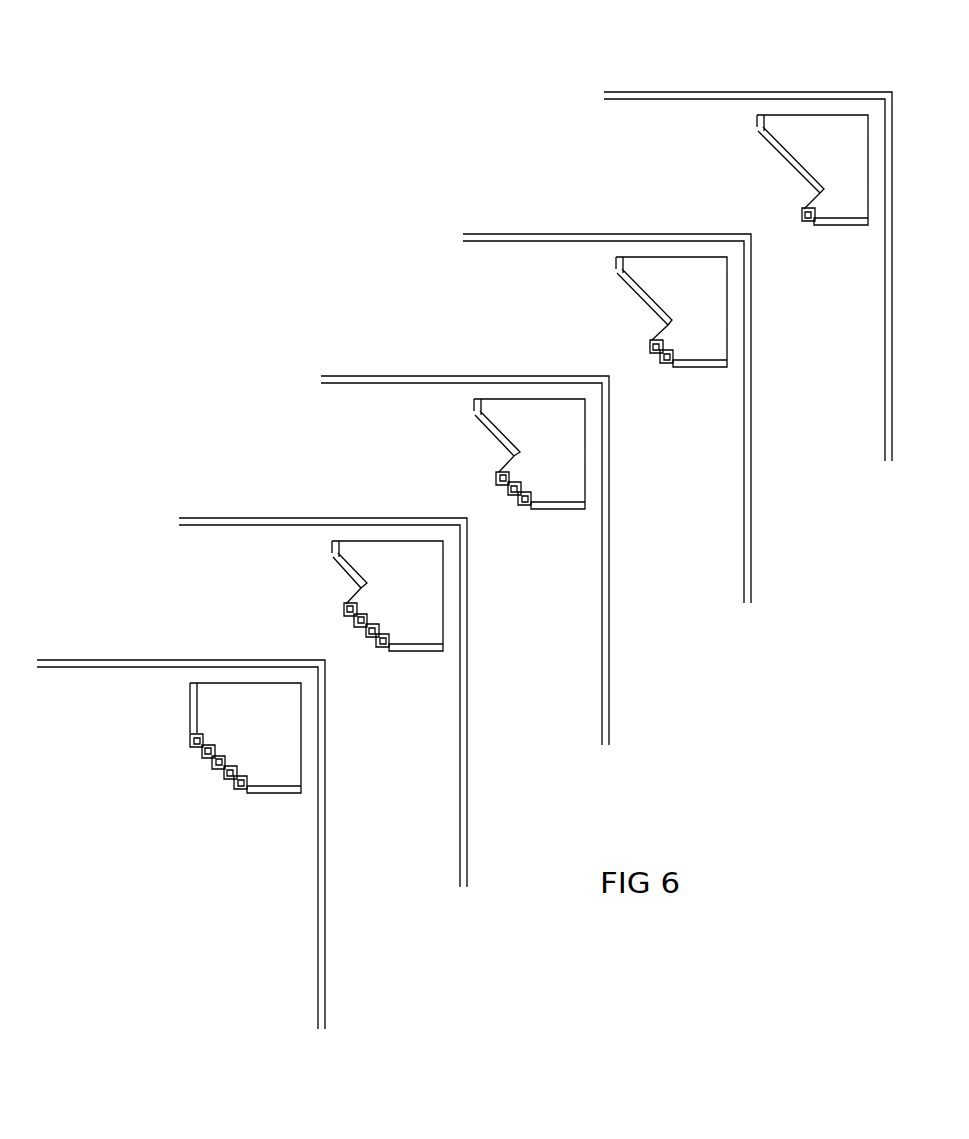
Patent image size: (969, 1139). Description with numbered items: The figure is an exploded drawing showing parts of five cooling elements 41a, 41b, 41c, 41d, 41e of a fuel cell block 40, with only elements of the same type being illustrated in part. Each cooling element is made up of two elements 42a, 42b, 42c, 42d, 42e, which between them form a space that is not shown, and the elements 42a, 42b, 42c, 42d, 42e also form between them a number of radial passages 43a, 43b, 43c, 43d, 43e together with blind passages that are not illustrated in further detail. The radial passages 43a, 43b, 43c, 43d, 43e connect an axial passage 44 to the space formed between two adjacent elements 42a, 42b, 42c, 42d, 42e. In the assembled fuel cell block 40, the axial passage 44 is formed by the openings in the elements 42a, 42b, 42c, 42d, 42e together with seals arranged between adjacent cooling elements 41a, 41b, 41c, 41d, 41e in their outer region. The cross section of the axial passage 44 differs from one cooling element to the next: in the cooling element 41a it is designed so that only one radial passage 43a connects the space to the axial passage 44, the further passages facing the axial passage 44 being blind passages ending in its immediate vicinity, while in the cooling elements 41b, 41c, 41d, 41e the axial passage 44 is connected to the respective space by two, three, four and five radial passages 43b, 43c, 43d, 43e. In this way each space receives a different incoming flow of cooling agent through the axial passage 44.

The fuel cell block 40 is at (705, 757).
The cooling element 41a is at (649, 115).
The cooling element 41b is at (508, 257).
The cooling element 41c is at (366, 399).
The cooling element 41d is at (224, 541).
The cooling element 41e is at (82, 683).
The element 42a is at (713, 92).
The element 42b is at (572, 234).
The element 42c is at (430, 376).
The element 42d is at (288, 518).
The element 42e is at (146, 660).
The radial passage 43a is at (806, 223).
The radial passages 43b is at (656, 353).
The radial passages 43c is at (503, 485).
The radial passages 43d is at (350, 617).
The radial passages 43e is at (238, 789).
The axial passage 44 is at (825, 130).